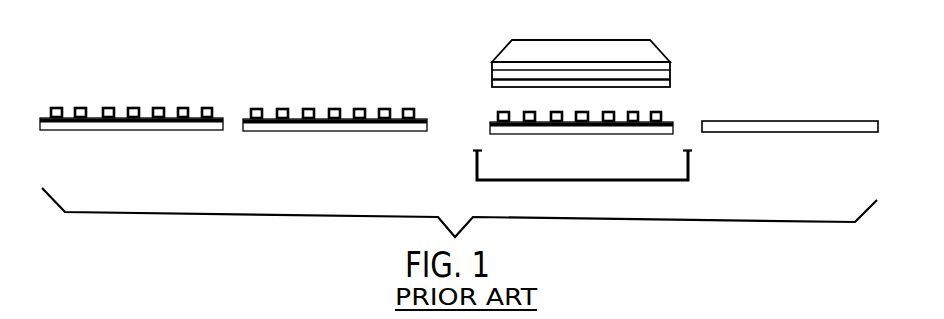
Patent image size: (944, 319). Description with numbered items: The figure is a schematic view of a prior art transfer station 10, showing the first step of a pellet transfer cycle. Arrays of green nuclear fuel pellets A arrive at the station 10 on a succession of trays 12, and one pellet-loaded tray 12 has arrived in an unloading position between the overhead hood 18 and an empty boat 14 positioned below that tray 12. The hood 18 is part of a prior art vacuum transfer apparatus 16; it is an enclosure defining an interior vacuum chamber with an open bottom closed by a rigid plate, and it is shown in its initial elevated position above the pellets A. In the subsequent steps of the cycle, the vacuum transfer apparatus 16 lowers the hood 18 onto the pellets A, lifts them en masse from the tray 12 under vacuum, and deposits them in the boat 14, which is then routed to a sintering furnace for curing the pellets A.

The transfer station 10 is at (575, 59).
The tray 12 is at (278, 131).
The boat 14 is at (477, 165).
The vacuum transfer apparatus 16 is at (483, 67).
The hood 18 is at (500, 52).
The green nuclear fuel pellet A is at (132, 107).